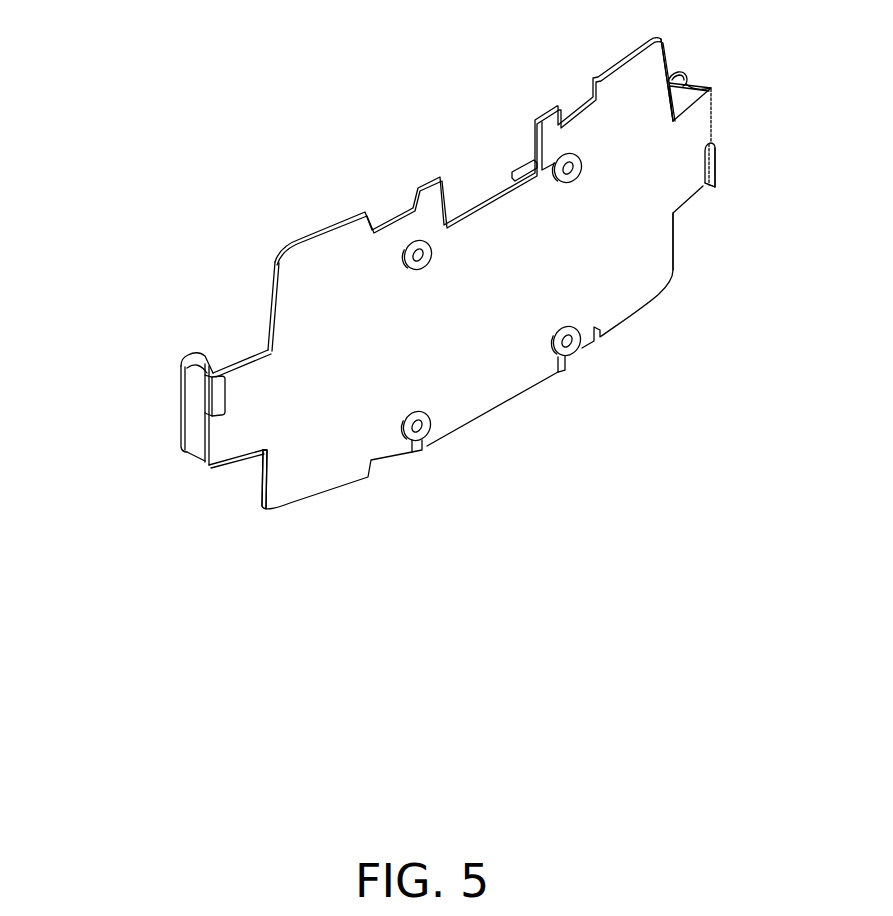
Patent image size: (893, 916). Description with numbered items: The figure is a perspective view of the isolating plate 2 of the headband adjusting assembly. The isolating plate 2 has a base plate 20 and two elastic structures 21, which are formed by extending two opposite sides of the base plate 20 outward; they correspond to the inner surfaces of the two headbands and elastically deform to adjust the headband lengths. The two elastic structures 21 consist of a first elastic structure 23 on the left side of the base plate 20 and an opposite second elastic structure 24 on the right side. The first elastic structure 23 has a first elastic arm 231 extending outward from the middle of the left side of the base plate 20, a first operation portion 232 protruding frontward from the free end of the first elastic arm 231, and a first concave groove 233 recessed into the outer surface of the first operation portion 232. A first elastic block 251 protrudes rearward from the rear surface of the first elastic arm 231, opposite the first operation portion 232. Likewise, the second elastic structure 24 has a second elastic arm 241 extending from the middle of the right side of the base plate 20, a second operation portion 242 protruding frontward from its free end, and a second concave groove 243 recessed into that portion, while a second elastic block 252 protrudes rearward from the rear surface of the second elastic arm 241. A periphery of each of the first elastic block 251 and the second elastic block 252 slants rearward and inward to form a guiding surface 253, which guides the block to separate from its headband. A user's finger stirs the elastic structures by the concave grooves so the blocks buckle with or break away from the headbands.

The isolating plate 2 is at (448, 107).
The base plate 20 is at (487, 385).
The elastic structures 21 is at (227, 481).
The first elastic structure 23 is at (80, 297).
The first elastic arm 231 is at (250, 372).
The first operation portion 232 is at (200, 352).
The first concave groove 233 is at (197, 437).
The second elastic structure 24 is at (816, 85).
The second elastic arm 241 is at (697, 132).
The second operation portion 242 is at (711, 88).
The second concave groove 243 is at (690, 83).
The first elastic block 251 is at (217, 395).
The second elastic block 252 is at (717, 163).
The guiding surface 253 is at (180, 417).